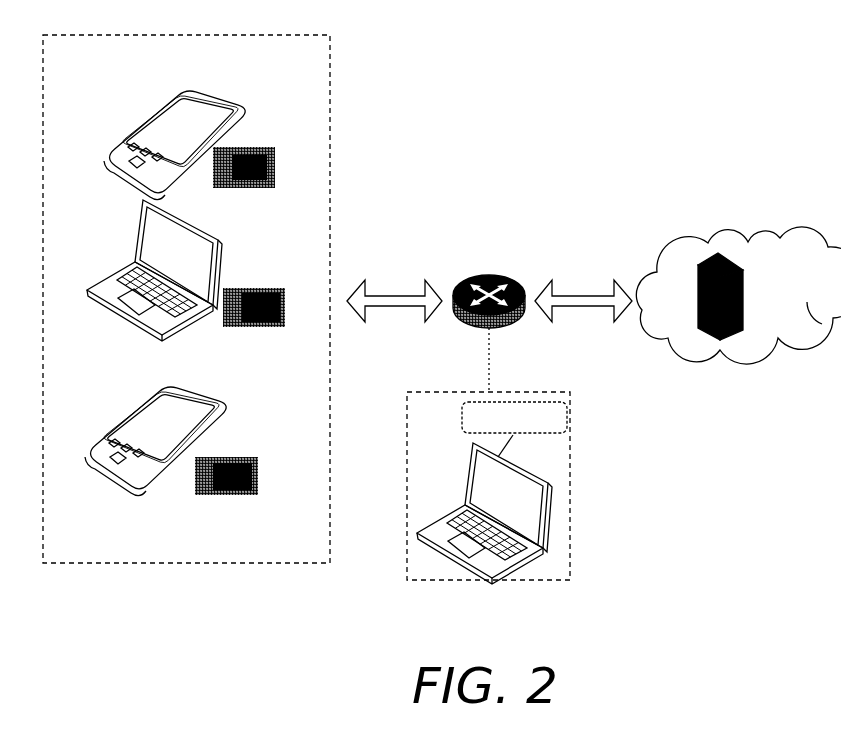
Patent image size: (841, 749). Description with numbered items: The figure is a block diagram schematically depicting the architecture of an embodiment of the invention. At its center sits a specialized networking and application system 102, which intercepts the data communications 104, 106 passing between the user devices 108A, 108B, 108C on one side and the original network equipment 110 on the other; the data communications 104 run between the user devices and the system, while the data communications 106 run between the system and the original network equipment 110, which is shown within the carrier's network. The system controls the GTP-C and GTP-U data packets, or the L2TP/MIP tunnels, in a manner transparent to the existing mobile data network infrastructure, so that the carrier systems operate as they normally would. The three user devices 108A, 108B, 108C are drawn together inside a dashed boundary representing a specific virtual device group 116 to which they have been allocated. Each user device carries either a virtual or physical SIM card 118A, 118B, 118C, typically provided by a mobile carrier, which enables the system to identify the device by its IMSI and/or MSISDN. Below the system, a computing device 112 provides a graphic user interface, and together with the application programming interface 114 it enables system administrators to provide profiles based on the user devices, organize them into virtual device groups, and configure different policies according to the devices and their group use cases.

The specialized networking and application system 102 is at (482, 273).
The data communications 104 is at (405, 293).
The data communications 106 is at (577, 287).
The user device 108A is at (185, 120).
The user device 108B is at (163, 252).
The user device 108C is at (187, 415).
The original network equipment 110 is at (716, 345).
The computing device 112 is at (460, 562).
The application programming interface 114 is at (553, 418).
The virtual device group 116 is at (331, 160).
The SIM card 118A is at (250, 153).
The SIM card 118B is at (242, 290).
The SIM card 118C is at (237, 460).